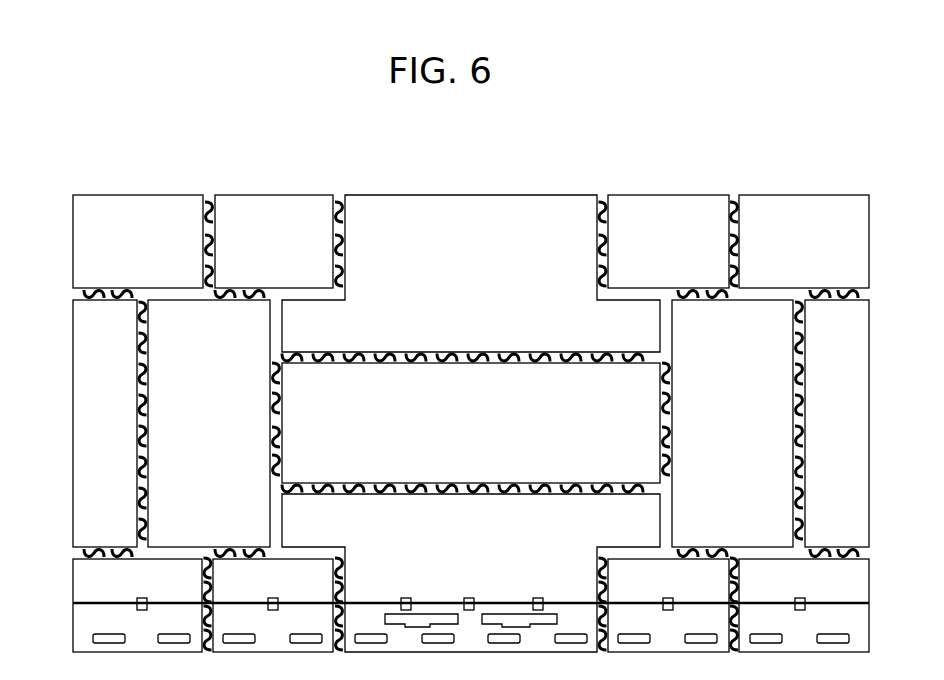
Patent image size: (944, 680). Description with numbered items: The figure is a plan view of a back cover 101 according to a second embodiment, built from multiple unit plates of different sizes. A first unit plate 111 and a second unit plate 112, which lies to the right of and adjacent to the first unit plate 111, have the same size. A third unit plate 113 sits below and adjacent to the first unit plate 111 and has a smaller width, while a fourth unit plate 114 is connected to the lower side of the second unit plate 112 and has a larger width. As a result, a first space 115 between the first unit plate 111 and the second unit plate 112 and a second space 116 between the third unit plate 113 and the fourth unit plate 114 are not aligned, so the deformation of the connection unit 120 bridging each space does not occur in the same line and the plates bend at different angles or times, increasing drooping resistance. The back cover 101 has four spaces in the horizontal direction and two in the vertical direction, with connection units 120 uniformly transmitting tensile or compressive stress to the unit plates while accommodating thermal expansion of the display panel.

The back cover 101 is at (63, 168).
The first unit plate 111 is at (141, 220).
The second unit plate 112 is at (272, 220).
The third unit plate 113 is at (92, 353).
The fourth unit plate 114 is at (167, 408).
The first space 115 is at (203, 236).
The second space 116 is at (138, 323).
The connection unit 120 is at (207, 197).